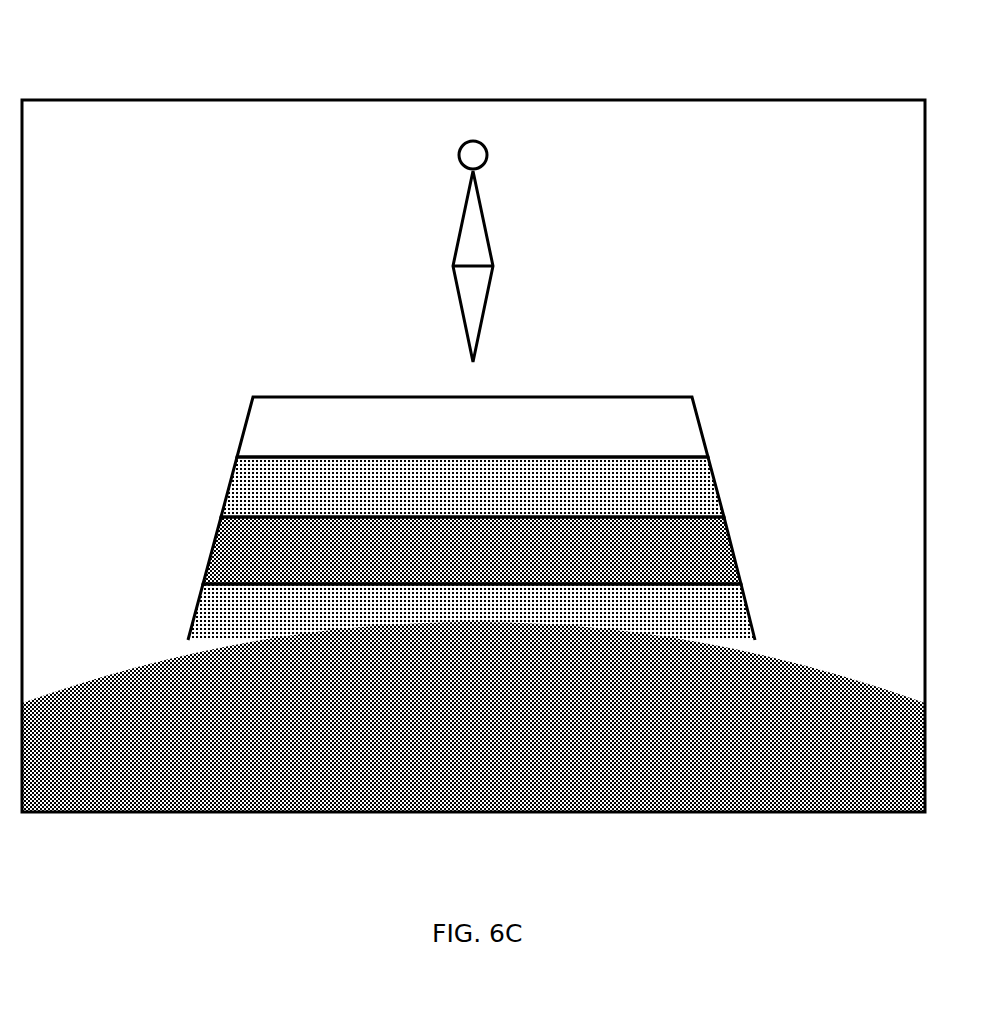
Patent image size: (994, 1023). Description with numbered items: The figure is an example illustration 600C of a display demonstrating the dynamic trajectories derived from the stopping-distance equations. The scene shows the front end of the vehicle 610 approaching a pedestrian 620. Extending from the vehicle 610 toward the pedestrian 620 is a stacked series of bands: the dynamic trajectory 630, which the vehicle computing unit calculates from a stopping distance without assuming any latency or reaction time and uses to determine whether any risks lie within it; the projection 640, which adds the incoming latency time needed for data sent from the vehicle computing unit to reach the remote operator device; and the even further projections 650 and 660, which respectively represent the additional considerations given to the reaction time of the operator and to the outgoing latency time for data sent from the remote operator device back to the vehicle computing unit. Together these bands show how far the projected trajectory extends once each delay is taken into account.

The illustration 600C is at (785, 98).
The vehicle 610 is at (832, 645).
The pedestrian 620 is at (489, 229).
The dynamic trajectory 630 is at (737, 557).
The projection 640 is at (191, 605).
The projection 650 is at (223, 485).
The projection 660 is at (709, 427).